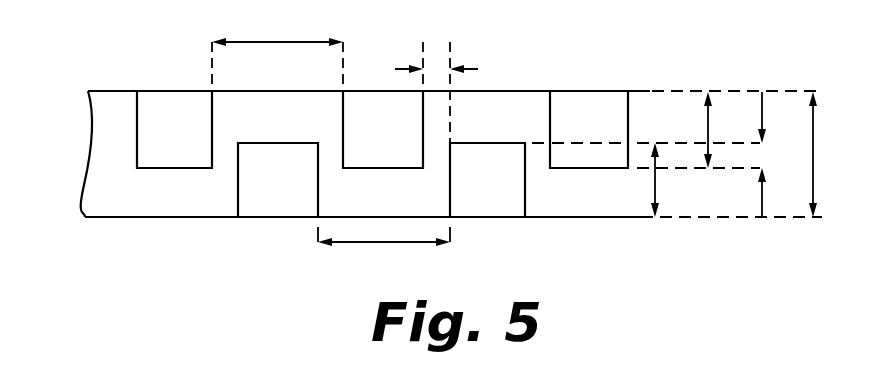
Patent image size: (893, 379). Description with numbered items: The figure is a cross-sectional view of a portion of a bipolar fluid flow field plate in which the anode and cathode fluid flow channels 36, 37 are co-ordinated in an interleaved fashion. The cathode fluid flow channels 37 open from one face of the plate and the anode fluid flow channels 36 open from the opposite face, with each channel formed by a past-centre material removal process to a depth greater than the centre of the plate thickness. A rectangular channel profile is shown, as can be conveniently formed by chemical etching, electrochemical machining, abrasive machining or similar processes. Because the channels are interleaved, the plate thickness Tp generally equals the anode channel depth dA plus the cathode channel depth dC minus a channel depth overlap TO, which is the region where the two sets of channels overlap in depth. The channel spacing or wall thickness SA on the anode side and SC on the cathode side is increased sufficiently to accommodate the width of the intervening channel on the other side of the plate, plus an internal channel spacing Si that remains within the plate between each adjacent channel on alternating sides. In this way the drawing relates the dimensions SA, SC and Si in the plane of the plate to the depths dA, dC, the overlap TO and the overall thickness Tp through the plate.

The anode fluid flow channel 36 is at (173, 91).
The cathode fluid flow channel 37 is at (278, 218).
The cathode channel spacing SC is at (277, 50).
The internal channel spacing Si is at (436, 92).
The anode channel spacing SA is at (384, 249).
The anode channel depth dA is at (642, 180).
The cathode channel depth dC is at (693, 130).
The channel depth overlap TO is at (778, 154).
The plate thickness Tp is at (827, 154).